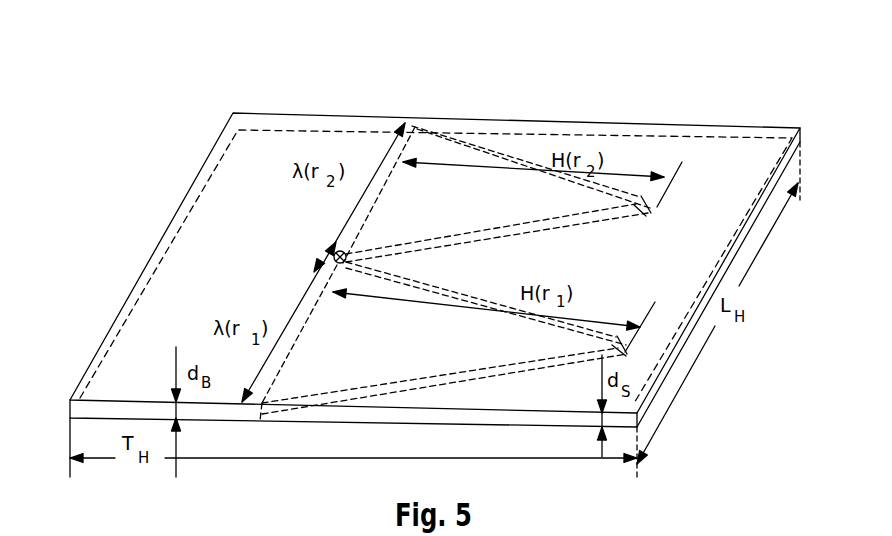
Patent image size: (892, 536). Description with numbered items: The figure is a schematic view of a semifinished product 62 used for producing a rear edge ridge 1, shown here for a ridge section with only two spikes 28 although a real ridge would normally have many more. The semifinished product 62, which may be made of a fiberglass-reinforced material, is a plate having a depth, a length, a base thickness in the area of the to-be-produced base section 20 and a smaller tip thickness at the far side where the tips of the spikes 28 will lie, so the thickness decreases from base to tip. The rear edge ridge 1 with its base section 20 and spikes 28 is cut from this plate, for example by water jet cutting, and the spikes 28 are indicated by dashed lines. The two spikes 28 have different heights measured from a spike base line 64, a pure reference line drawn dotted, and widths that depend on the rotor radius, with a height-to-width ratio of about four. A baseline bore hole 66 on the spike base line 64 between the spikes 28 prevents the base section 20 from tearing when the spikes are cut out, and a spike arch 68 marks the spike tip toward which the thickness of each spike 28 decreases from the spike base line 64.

The rear edge ridge 1 is at (177, 98).
The base section 20 is at (185, 265).
The semifinished product 62 is at (515, 80).
The spikes 28 is at (446, 216).
The spike base line 64 is at (305, 312).
The baseline bore hole 66 is at (334, 253).
The spike arch 68 is at (643, 207).